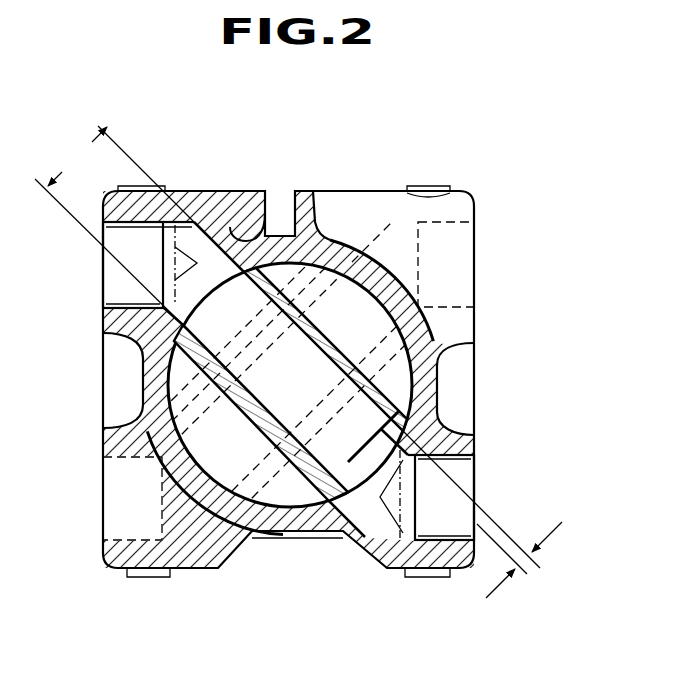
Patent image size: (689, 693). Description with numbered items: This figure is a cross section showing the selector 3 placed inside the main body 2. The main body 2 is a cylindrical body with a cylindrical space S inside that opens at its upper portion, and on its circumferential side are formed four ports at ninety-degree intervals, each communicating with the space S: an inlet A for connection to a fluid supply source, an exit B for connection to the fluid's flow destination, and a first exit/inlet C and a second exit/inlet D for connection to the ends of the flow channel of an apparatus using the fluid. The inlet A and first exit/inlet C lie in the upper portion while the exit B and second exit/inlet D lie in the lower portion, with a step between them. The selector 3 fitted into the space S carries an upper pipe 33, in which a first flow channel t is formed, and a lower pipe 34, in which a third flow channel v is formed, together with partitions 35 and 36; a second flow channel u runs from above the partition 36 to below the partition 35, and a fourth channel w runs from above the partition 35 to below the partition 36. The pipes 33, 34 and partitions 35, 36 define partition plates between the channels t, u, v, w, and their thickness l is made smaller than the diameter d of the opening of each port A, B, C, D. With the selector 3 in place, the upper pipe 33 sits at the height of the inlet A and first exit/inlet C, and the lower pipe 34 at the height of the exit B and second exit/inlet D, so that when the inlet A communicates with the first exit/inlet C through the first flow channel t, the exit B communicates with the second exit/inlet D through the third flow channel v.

The main body 2 is at (380, 190).
The selector 3 is at (395, 300).
The upper pipe 33 is at (385, 397).
The lower pipe 34 is at (210, 394).
The partition 35 is at (290, 485).
The partition 36 is at (273, 275).
The second flow channel u is at (362, 249).
The inlet A is at (477, 230).
The exit B is at (477, 467).
The first exit/inlet C is at (103, 523).
The second exit/inlet D is at (103, 278).
The fourth flow channel w is at (167, 453).
The third flow channel v is at (225, 490).
The first flow channel t is at (322, 495).
The cylindrical space S is at (360, 497).
The diameter of the port opening d is at (287, 347).
The thickness of the partition plate l is at (519, 560).